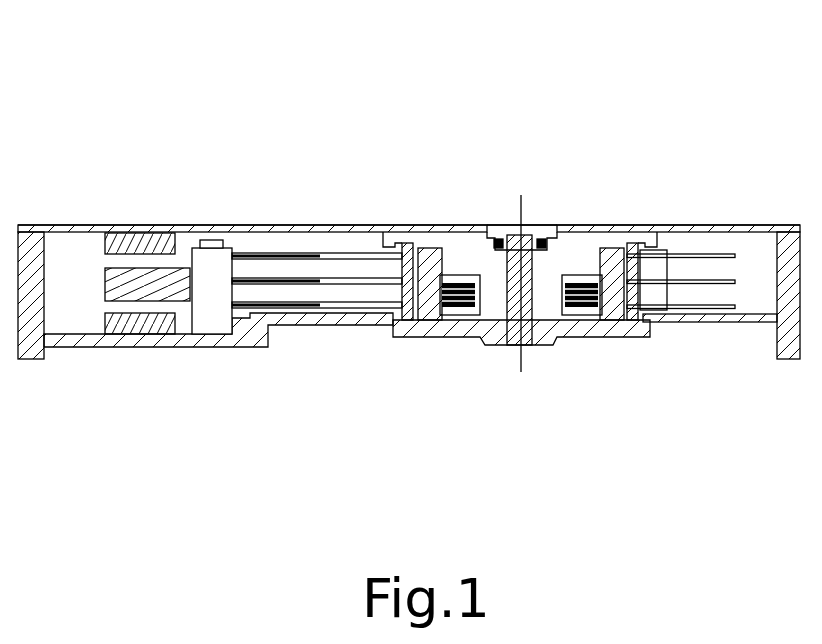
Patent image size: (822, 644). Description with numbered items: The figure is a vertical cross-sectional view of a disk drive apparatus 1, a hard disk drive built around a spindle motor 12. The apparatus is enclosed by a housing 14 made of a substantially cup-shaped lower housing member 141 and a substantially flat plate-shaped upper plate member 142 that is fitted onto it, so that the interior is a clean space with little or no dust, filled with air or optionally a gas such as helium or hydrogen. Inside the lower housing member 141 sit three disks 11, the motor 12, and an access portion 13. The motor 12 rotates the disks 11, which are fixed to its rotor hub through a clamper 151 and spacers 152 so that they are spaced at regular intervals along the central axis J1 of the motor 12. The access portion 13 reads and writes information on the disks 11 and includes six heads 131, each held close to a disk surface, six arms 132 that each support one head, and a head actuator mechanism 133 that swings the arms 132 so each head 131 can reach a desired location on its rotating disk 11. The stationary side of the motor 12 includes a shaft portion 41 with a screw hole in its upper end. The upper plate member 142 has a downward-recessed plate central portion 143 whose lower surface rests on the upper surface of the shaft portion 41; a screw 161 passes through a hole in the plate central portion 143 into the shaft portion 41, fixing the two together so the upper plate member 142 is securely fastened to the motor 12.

The disk drive apparatus 1 is at (205, 119).
The disks 11 is at (669, 258).
The motor 12 is at (618, 243).
The access portion 13 is at (313, 150).
The heads 131 is at (318, 251).
The arms 132 is at (243, 258).
The head actuator mechanism 133 is at (210, 318).
The housing 14 is at (718, 89).
The lower housing member 141 is at (805, 260).
The upper plate member 142 is at (684, 226).
The plate central portion 143 is at (544, 238).
The clamper 151 is at (413, 241).
The spacers 152 is at (406, 318).
The screw 161 is at (528, 237).
The shaft portion 41 is at (528, 346).
The central axis J1 is at (521, 205).